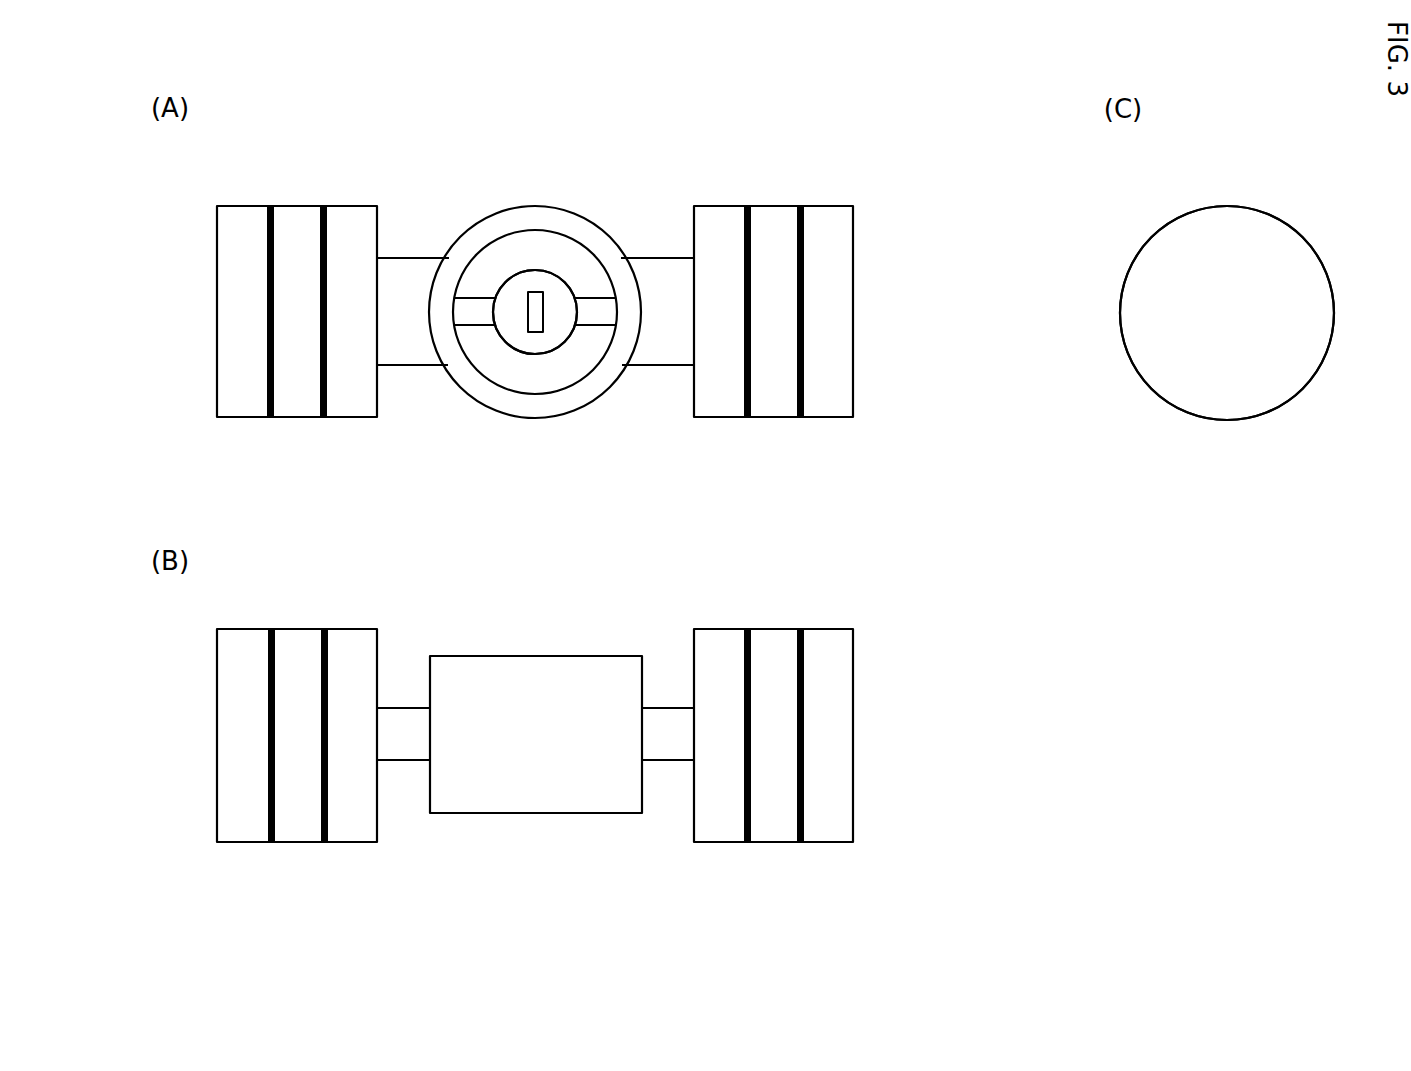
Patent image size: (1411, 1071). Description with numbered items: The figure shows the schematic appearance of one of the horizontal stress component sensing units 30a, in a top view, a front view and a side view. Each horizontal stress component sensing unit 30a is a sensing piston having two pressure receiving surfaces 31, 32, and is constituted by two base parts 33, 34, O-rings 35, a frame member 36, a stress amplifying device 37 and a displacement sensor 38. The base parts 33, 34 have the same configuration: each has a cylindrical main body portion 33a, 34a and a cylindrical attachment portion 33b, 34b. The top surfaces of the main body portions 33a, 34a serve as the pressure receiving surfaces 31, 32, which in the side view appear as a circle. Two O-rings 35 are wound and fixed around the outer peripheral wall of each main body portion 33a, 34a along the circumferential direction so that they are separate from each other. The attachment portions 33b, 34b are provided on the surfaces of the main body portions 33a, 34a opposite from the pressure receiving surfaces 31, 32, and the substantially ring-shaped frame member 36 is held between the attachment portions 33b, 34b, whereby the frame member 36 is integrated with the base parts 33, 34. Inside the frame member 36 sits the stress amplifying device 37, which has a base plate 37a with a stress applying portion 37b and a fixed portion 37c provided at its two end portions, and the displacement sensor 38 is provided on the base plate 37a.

The horizontal stress component sensing unit 30a is at (803, 151).
The pressure receiving surface 31 is at (205, 272).
The pressure receiving surface 32 is at (866, 262).
The base part 33 is at (325, 150).
The main body portion 33a is at (347, 208).
The attachment portion 33b is at (403, 263).
The base part 34 is at (740, 151).
The main body portion 34a is at (718, 212).
The attachment portion 34b is at (657, 263).
The O-ring 35 is at (323, 417).
The frame member 36 is at (503, 215).
The stress amplifying device 37 is at (402, 468).
The base plate 37a is at (535, 350).
The stress applying portion 37b is at (472, 318).
The fixed portion 37c is at (593, 318).
The displacement sensor 38 is at (534, 292).